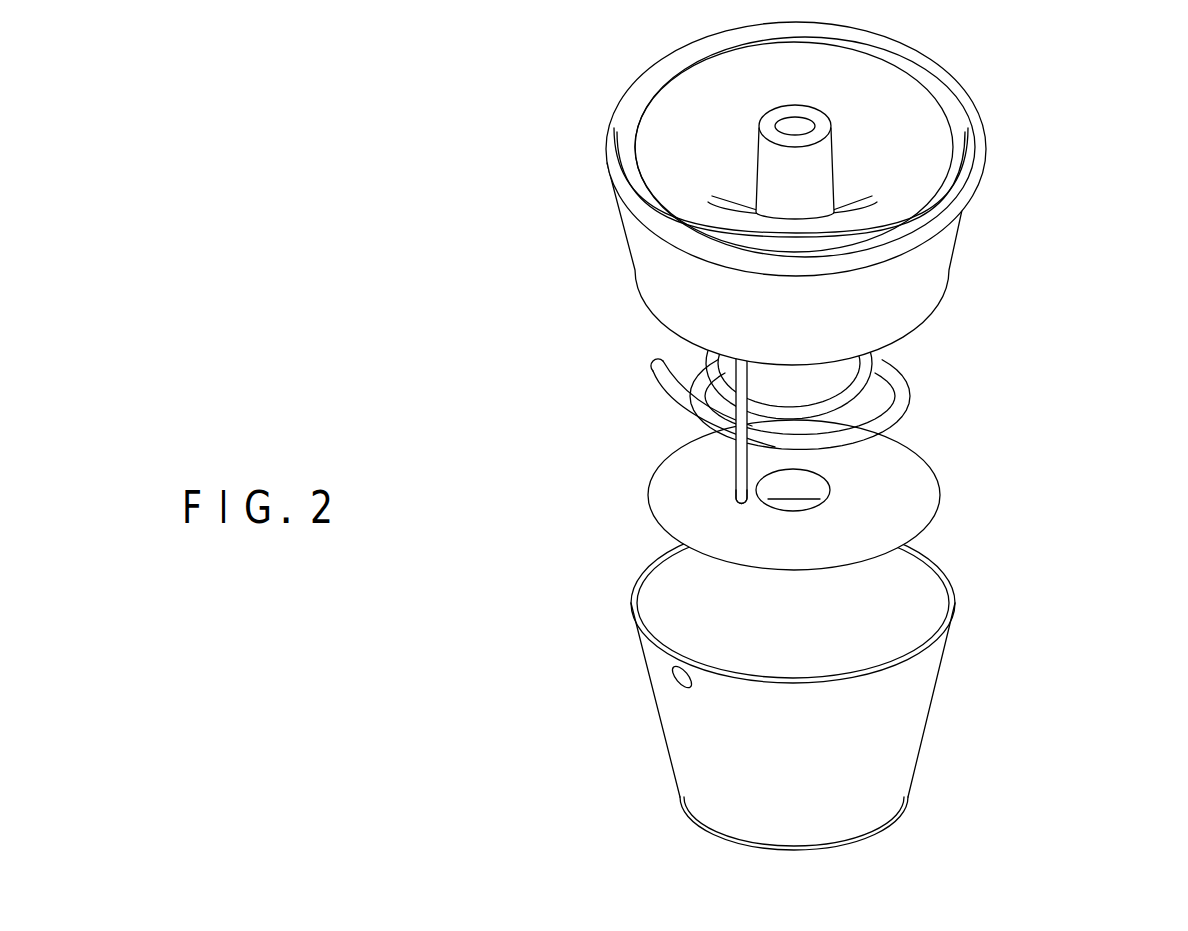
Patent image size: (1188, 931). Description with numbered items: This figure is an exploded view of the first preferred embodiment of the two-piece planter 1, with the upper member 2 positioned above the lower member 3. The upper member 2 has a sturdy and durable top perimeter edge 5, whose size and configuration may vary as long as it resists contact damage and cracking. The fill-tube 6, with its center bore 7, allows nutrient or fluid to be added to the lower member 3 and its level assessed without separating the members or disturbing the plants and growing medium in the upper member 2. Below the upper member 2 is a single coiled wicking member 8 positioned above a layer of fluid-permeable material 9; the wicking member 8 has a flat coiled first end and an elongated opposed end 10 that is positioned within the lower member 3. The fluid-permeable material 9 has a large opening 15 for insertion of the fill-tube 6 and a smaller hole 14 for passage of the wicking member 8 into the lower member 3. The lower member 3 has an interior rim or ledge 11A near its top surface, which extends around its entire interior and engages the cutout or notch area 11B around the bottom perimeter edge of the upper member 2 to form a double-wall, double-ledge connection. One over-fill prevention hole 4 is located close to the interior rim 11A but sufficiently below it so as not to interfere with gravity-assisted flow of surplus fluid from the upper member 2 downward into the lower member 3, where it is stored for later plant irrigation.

The two-piece planter 1 is at (856, 436).
The upper member 2 is at (655, 287).
The lower member 3 is at (912, 683).
The over-fill prevention hole 4 is at (676, 677).
The top edge of upper member 5 is at (620, 193).
The fill-tube 6 is at (805, 172).
The center bore 7 is at (780, 125).
The wicking member 8 is at (898, 385).
The fluid-permeable material 9 is at (920, 486).
The end of wicking member 10 is at (738, 462).
The interior rim/ledge of lower member 11A is at (658, 566).
The cutout/notch area of upper member 11B is at (915, 343).
The hole in fluid-permeable material for wicking member 14 is at (722, 495).
The hole in fluid-permeable material for fill-tube 15 is at (812, 484).